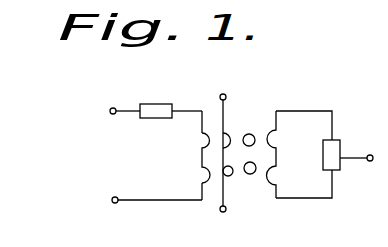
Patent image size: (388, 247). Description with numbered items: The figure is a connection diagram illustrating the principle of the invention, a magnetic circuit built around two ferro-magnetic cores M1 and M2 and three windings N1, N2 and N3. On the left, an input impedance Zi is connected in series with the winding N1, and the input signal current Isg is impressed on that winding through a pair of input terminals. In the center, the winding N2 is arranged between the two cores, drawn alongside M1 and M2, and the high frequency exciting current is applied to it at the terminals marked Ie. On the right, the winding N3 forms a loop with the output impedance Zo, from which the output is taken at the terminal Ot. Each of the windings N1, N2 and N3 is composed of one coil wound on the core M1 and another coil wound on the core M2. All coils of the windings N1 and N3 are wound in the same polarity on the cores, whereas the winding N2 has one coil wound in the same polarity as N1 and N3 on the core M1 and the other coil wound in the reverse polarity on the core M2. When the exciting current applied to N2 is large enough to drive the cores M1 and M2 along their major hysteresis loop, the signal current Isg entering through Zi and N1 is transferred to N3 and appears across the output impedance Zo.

The input signal current Isg is at (153, 155).
The input impedance Zi is at (155, 108).
The winding N1 is at (196, 158).
The excitation current terminals Ie is at (220, 146).
The winding N2 is at (220, 154).
The ferro-magnetic core M1 is at (250, 134).
The ferro-magnetic core M2 is at (250, 174).
The winding N3 is at (281, 154).
The output impedance Zo is at (338, 169).
The output terminal Ot is at (361, 169).